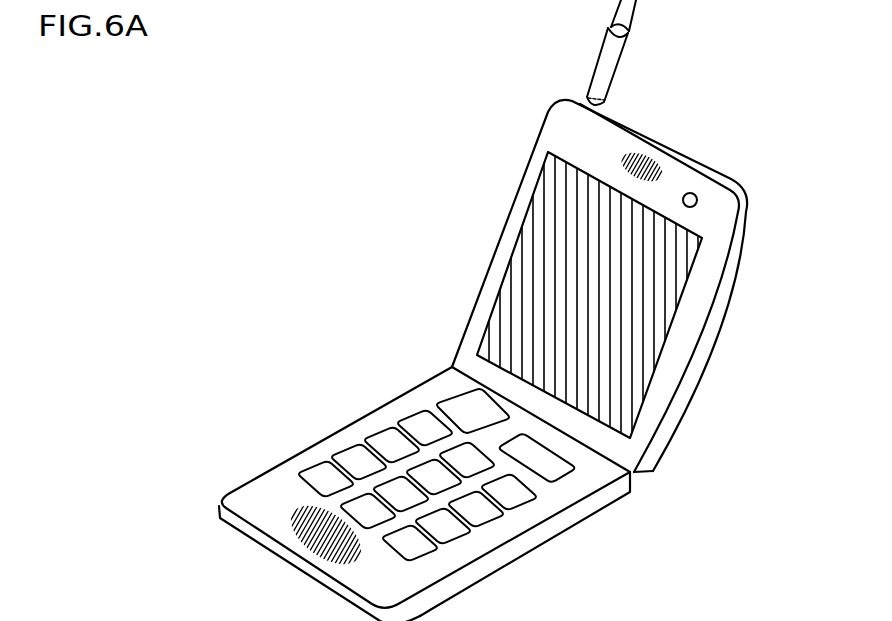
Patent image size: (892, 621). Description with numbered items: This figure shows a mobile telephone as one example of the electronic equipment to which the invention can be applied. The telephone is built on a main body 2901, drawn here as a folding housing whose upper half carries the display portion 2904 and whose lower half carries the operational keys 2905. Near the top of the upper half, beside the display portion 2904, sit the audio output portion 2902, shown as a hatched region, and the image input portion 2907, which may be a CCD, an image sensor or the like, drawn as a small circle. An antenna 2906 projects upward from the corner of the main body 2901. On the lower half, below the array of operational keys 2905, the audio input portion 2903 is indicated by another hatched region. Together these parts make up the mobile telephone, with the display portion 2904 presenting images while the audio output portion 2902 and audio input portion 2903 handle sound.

The main body 2901 is at (570, 137).
The audio output portion 2902 is at (653, 165).
The audio input portion 2903 is at (320, 550).
The display portion 2904 is at (537, 263).
The operational keys 2905 is at (382, 440).
The antenna 2906 is at (604, 63).
The image input portion 2907 is at (698, 200).